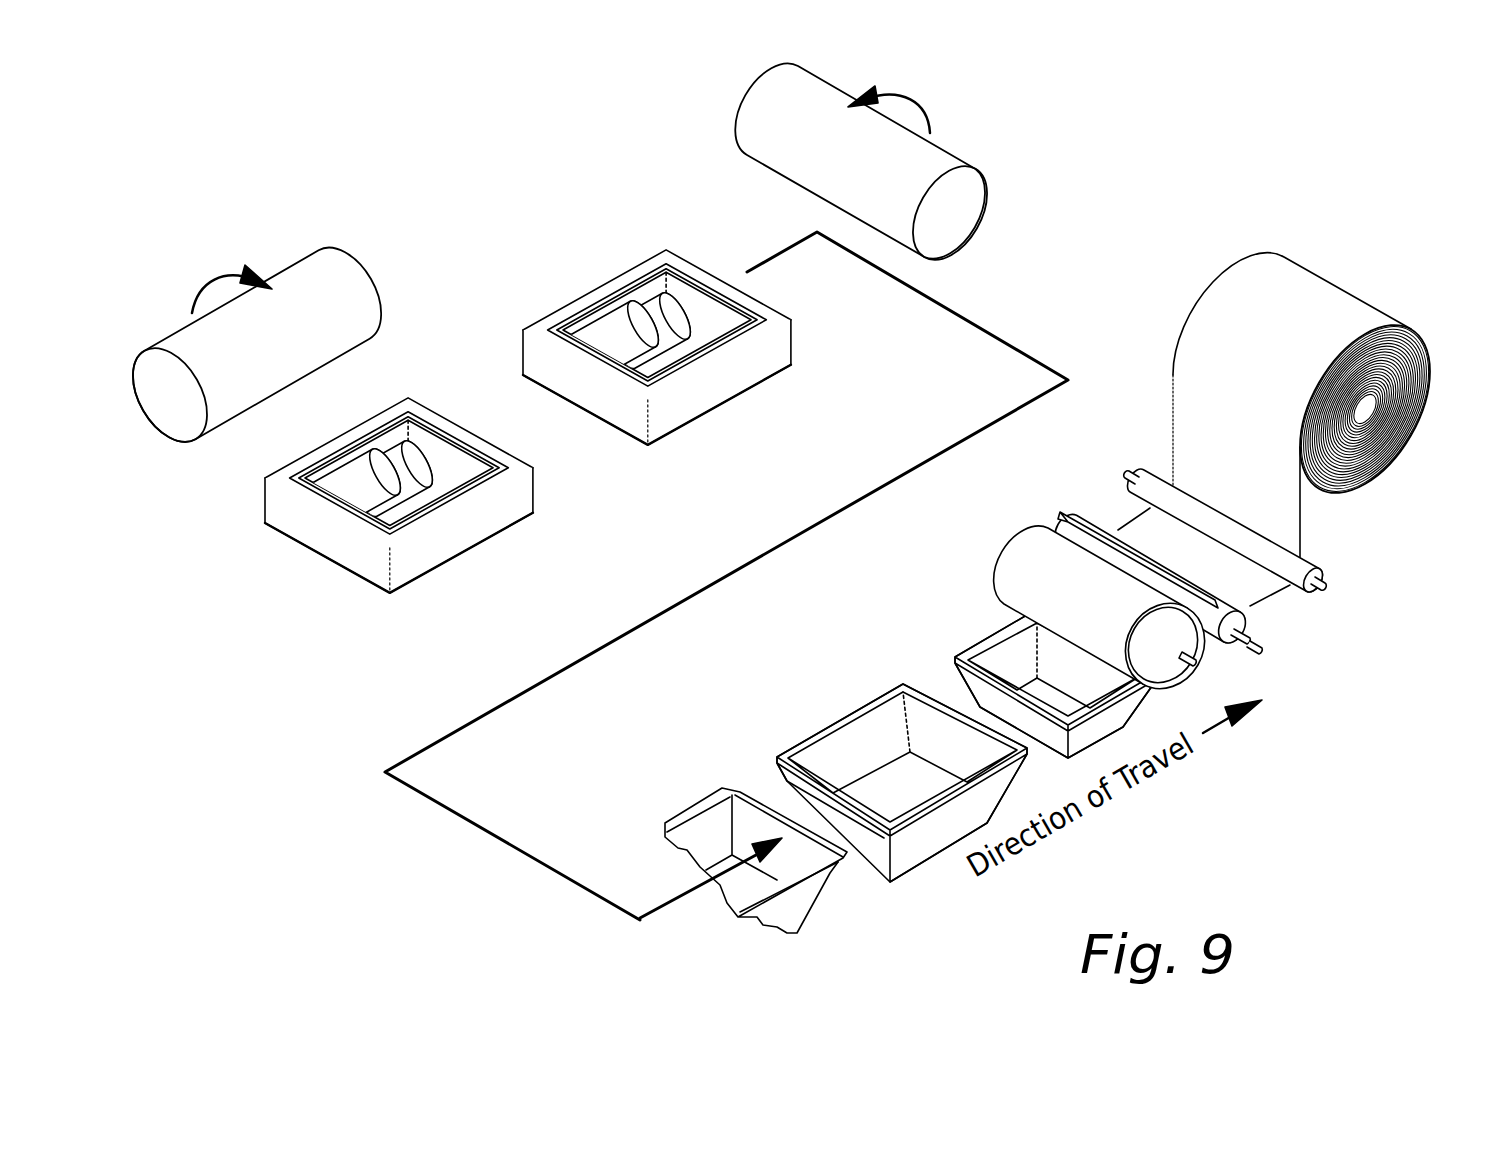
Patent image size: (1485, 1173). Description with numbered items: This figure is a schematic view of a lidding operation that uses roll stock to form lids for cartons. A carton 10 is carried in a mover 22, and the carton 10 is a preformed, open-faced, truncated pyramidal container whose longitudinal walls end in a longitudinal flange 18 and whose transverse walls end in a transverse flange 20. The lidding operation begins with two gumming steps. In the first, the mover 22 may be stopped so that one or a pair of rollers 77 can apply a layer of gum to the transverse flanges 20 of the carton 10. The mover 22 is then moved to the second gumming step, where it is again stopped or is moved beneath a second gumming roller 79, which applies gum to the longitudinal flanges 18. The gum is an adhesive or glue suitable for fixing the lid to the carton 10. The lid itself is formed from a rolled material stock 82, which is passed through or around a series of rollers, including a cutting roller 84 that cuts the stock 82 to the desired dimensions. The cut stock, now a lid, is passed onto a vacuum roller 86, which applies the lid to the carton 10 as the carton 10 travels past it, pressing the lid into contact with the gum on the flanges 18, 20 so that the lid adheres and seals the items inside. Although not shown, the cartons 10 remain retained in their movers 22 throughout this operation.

The carton 10 is at (320, 472).
The longitudinal flange 18 is at (378, 423).
The transverse flange 20 is at (458, 428).
The mover 22 is at (470, 560).
The roller 77 is at (342, 260).
The second gumming roller 79 is at (955, 160).
The rolled material stock 82 is at (1387, 460).
The cutting roller 84 is at (1073, 510).
The vacuum roller 86 is at (987, 558).